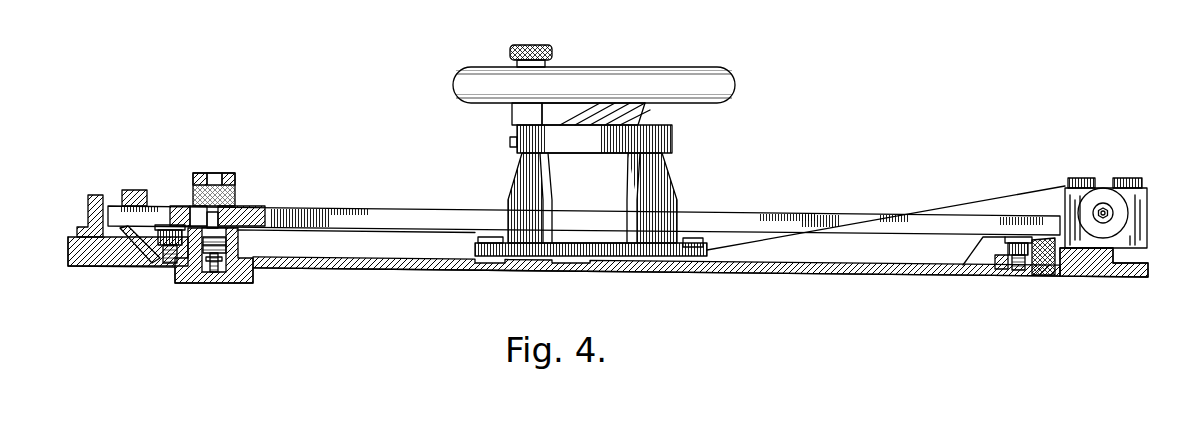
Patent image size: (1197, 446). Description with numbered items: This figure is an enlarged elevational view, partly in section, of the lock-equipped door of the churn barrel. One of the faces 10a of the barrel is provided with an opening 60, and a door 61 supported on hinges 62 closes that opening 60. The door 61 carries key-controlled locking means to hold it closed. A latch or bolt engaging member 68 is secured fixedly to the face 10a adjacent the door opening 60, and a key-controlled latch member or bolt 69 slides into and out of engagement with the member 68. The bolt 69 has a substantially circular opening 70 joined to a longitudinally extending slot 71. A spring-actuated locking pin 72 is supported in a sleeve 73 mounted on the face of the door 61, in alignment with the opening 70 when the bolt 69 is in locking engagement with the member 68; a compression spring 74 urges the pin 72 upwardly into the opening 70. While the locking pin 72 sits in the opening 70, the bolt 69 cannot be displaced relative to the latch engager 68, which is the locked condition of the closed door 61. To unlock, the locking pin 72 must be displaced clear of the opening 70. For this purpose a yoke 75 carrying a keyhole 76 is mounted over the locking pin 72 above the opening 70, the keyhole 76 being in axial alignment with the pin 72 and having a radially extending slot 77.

The face 10a is at (1084, 282).
The opening 60 is at (1040, 278).
The door 61 is at (822, 273).
The hinges 62 is at (1110, 213).
The latch or bolt engaging member 68 is at (96, 196).
The latch member or bolt 69 is at (296, 213).
The opening 70 is at (220, 212).
The slot 71 is at (195, 212).
The locking pin 72 is at (243, 210).
The sleeve 73 is at (237, 243).
The compression spring 74 is at (206, 272).
The yoke 75 is at (233, 178).
The keyhole 76 is at (216, 172).
The slot 77 is at (206, 178).